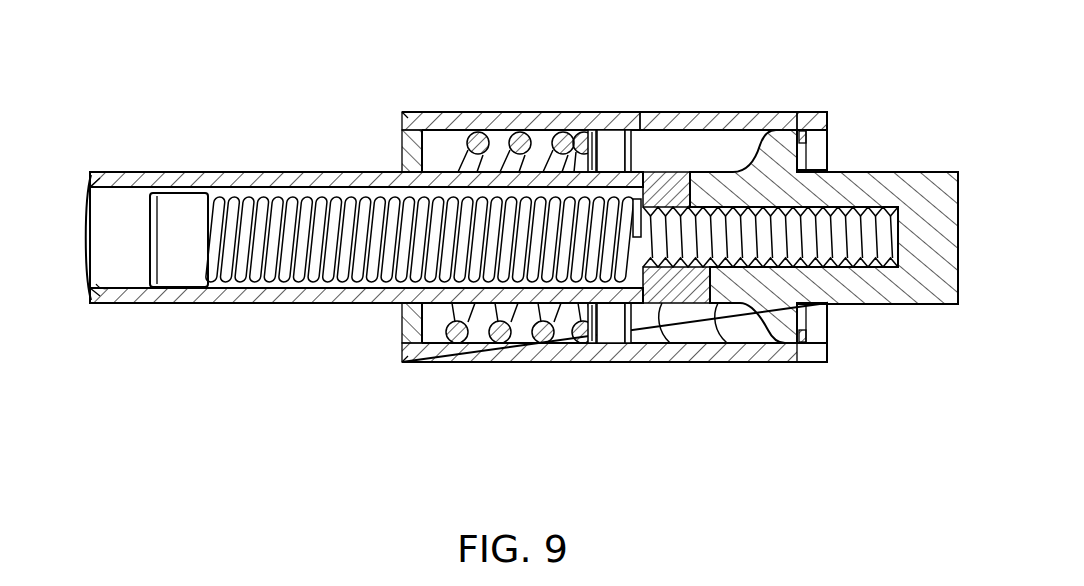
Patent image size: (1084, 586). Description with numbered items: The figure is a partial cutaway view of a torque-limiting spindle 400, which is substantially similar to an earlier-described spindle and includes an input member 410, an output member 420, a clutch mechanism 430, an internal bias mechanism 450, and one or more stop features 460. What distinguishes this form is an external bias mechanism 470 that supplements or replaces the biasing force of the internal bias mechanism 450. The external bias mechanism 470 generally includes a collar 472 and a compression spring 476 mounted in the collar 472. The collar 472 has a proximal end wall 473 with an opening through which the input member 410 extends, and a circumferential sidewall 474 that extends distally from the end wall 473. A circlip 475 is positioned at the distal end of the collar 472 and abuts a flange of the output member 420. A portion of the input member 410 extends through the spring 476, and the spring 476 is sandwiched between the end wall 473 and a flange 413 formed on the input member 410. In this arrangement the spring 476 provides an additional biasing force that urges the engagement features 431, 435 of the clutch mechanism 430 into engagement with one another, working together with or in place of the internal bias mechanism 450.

The torque-limiting spindle 400 is at (249, 56).
The input member 410 is at (176, 172).
The flange 413 is at (618, 140).
The output member 420 is at (925, 172).
The clutch mechanism 430 is at (703, 152).
The engagement feature 431 is at (668, 344).
The engagement feature 435 is at (725, 344).
The bias mechanism 450 is at (129, 272).
The stop feature 460 is at (71, 206).
The external bias mechanism 470 is at (437, 56).
The collar 472 is at (651, 56).
The proximal end wall 473 is at (402, 128).
The circumferential sidewall 474 is at (490, 114).
The circlip 475 is at (812, 140).
The compression spring 476 is at (576, 133).